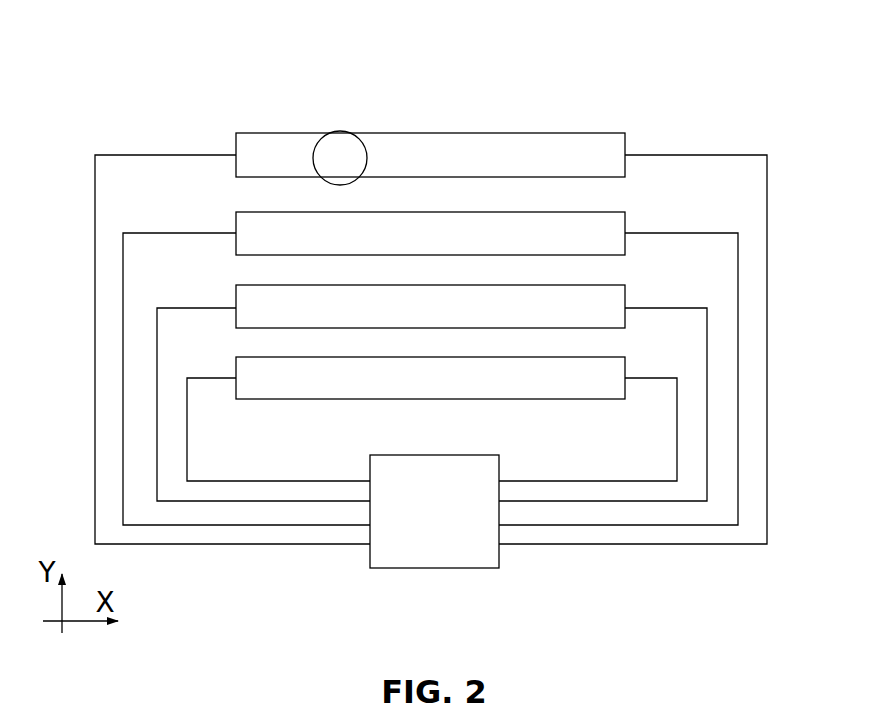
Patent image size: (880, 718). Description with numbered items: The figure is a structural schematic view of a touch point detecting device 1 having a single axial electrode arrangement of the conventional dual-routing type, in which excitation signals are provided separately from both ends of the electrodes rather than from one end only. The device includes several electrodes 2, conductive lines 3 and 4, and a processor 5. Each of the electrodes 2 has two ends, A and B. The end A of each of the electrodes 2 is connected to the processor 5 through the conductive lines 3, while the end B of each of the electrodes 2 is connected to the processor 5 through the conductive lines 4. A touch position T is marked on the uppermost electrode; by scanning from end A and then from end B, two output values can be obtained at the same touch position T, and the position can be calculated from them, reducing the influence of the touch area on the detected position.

The touch point detecting device 1 is at (238, 103).
The electrodes 2 is at (520, 143).
The conductive lines 3 is at (95, 262).
The conductive lines 4 is at (767, 350).
The processor 5 is at (434, 511).
The touch position T is at (343, 151).